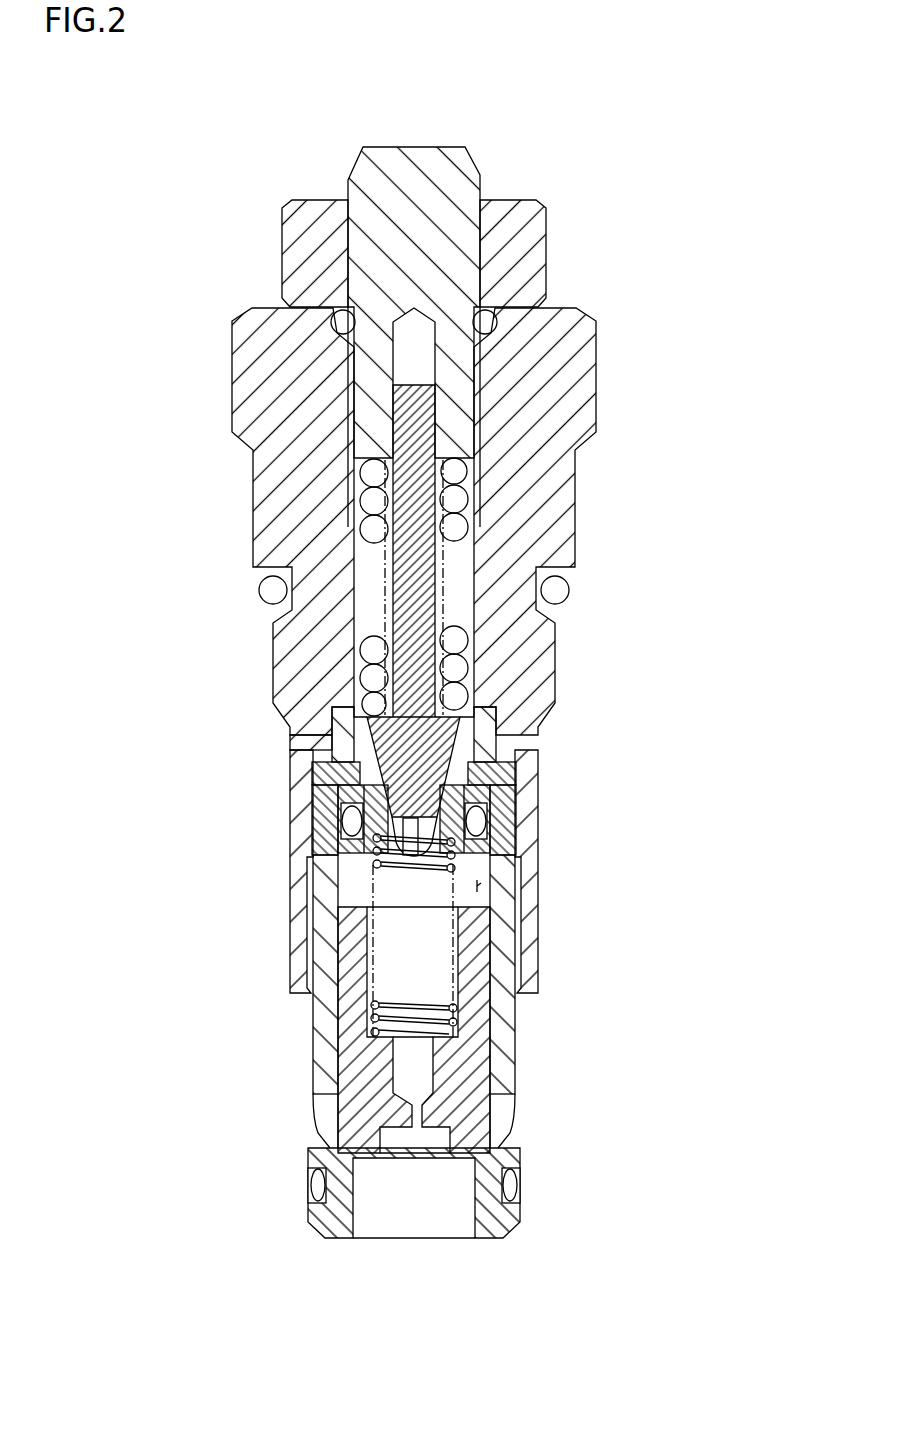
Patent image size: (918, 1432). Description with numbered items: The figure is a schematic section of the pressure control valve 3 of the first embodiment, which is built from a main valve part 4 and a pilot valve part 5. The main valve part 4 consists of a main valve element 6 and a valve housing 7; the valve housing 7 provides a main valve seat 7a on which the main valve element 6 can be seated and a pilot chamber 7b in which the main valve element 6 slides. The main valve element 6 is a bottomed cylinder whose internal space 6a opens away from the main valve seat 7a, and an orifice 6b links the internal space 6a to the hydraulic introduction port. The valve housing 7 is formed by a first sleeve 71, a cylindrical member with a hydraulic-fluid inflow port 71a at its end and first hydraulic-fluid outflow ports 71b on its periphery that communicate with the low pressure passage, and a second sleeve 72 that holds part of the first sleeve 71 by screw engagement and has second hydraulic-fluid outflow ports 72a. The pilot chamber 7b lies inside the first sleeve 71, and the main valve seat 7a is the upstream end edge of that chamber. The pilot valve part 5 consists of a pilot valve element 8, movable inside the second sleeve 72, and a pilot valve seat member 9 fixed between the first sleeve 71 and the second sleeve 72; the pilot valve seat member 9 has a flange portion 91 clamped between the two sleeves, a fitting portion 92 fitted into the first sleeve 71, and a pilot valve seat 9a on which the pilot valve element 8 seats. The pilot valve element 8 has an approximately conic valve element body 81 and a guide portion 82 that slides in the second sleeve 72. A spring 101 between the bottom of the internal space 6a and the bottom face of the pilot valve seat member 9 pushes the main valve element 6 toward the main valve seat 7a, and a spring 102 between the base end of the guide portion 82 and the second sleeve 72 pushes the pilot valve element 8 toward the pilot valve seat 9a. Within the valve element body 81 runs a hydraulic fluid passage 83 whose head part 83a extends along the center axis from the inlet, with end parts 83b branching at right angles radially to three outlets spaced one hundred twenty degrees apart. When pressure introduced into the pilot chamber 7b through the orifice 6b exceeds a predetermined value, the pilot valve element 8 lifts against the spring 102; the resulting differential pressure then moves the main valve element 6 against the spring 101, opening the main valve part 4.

The pressure control valve 3 is at (402, 1082).
The main valve part 4 is at (502, 1058).
The pilot valve part 5 is at (352, 722).
The main valve element 6 is at (360, 1055).
The internal space 6a is at (405, 946).
The orifice 6b is at (420, 1106).
The valve housing 7 is at (270, 950).
The main valve seat 7a is at (342, 1137).
The pilot chamber 7b is at (480, 887).
The pilot valve element 8 is at (447, 542).
The pilot valve seat member 9 is at (298, 772).
The pilot valve seat 9a is at (377, 787).
The first sleeve 71 is at (322, 1009).
The hydraulic-fluid inflow port 71a is at (357, 1202).
The first hydraulic-fluid outflow ports 71b is at (508, 1138).
The second sleeve 72 is at (300, 675).
The second hydraulic-fluid outflow ports 72a is at (313, 749).
The valve element body 81 is at (455, 740).
The guide portion 82 is at (418, 582).
The hydraulic fluid passage 83 is at (299, 852).
The head part 83a is at (372, 856).
The end parts 83b is at (400, 822).
The flange portion 91 is at (516, 764).
The fitting portion 92 is at (480, 805).
The spring 101 is at (457, 862).
The spring 102 is at (462, 517).